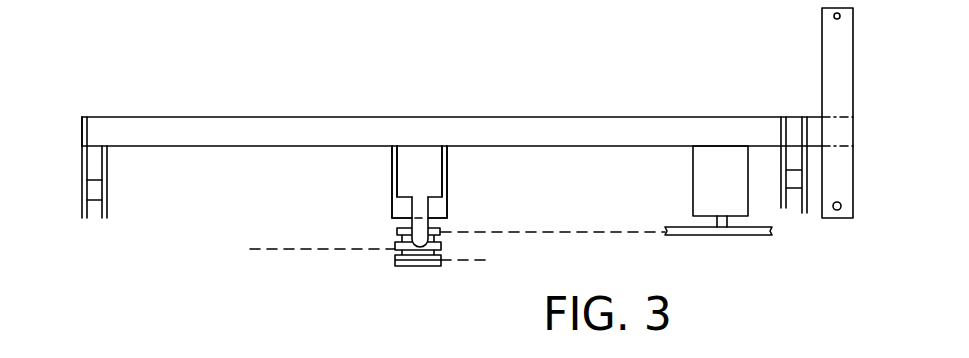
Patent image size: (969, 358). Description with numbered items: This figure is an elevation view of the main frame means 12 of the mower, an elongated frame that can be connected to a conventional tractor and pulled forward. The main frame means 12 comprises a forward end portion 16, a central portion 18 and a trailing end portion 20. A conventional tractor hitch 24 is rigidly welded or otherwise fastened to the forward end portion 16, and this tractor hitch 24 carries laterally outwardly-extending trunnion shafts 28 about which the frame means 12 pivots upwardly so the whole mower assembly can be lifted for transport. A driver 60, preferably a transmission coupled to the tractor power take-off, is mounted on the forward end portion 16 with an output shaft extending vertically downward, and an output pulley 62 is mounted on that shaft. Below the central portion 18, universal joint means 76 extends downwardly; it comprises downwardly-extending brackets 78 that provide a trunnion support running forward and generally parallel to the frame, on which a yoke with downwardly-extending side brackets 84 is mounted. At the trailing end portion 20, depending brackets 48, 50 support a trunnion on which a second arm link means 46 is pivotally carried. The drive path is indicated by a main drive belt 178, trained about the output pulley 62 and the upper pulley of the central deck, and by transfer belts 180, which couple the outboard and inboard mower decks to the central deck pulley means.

The main frame means 12 is at (564, 128).
The forward end portion 16 is at (767, 110).
The central portion 18 is at (428, 113).
The trailing end portion 20 is at (118, 131).
The tractor hitch 24 is at (795, 69).
The trunnion shafts 28 is at (836, 212).
The second arm link means 46 is at (97, 178).
The depending bracket 48 is at (82, 217).
The depending bracket 50 is at (103, 215).
The driver 60 is at (711, 184).
The output pulley 62 is at (685, 236).
The universal joint means 76 is at (371, 201).
The downwardly-extending brackets 78 is at (392, 185).
The side brackets 84 is at (430, 224).
The main drive belt 178 is at (566, 233).
The transfer belts 180 is at (328, 249).